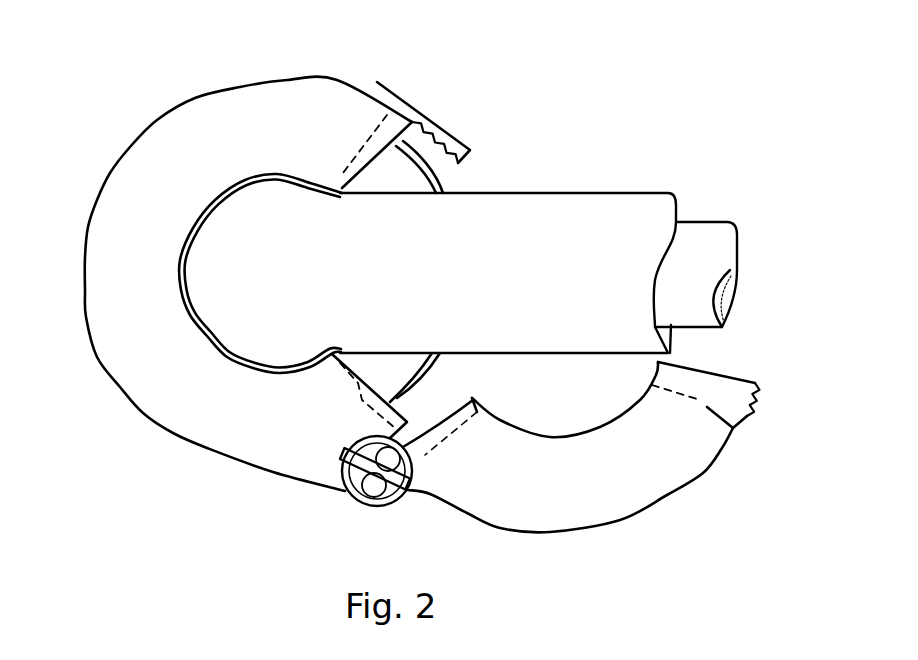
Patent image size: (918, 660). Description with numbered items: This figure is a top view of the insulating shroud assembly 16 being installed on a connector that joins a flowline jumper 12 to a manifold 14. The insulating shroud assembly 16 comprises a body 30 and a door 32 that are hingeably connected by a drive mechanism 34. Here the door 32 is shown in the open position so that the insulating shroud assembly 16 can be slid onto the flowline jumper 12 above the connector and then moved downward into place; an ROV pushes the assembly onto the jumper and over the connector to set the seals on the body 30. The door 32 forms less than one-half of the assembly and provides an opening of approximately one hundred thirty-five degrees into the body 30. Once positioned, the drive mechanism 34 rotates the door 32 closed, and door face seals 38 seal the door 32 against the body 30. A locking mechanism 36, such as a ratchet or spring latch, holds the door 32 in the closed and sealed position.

The flowline jumper 12 is at (485, 272).
The manifold 14 is at (442, 190).
The insulating shroud assembly 16 is at (388, 53).
The body 30 is at (177, 405).
The door 32 is at (612, 488).
The drive mechanism 34 is at (358, 505).
The locking mechanism 36 is at (433, 113).
The door face seals 38 is at (355, 135).